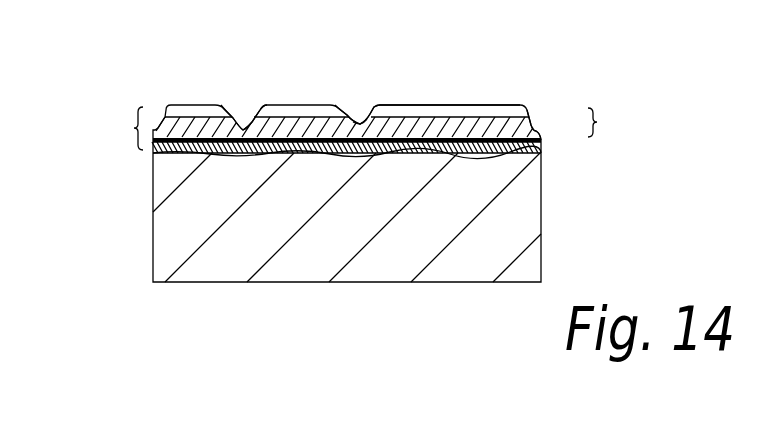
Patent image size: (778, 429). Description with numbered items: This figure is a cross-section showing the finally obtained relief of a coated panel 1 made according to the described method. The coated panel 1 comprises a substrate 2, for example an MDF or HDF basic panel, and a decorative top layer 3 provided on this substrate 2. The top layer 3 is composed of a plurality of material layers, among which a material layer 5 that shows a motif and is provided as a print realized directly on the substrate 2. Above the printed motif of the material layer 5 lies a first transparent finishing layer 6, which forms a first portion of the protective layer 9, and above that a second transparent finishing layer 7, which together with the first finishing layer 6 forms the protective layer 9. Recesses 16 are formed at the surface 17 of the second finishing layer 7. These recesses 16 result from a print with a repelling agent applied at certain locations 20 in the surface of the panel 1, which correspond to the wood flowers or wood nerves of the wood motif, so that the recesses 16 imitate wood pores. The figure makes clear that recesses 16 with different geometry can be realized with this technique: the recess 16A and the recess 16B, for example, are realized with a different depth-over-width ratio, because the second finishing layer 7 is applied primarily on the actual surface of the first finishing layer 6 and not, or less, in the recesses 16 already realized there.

The coated panel 1 is at (476, 93).
The substrate 2 is at (165, 228).
The decorative top layer 3 is at (134, 128).
The material layer with motif 5 is at (277, 140).
The first transparent finishing layer 6 is at (541, 139).
The second transparent finishing layer 7 is at (193, 110).
The protective layer 9 is at (597, 122).
The recesses 16 is at (153, 120).
The recess 16A is at (245, 116).
The recess 16B is at (365, 112).
The surface of the second finishing layer 17 is at (392, 105).
The locations in the surface of the panel 20 is at (360, 124).